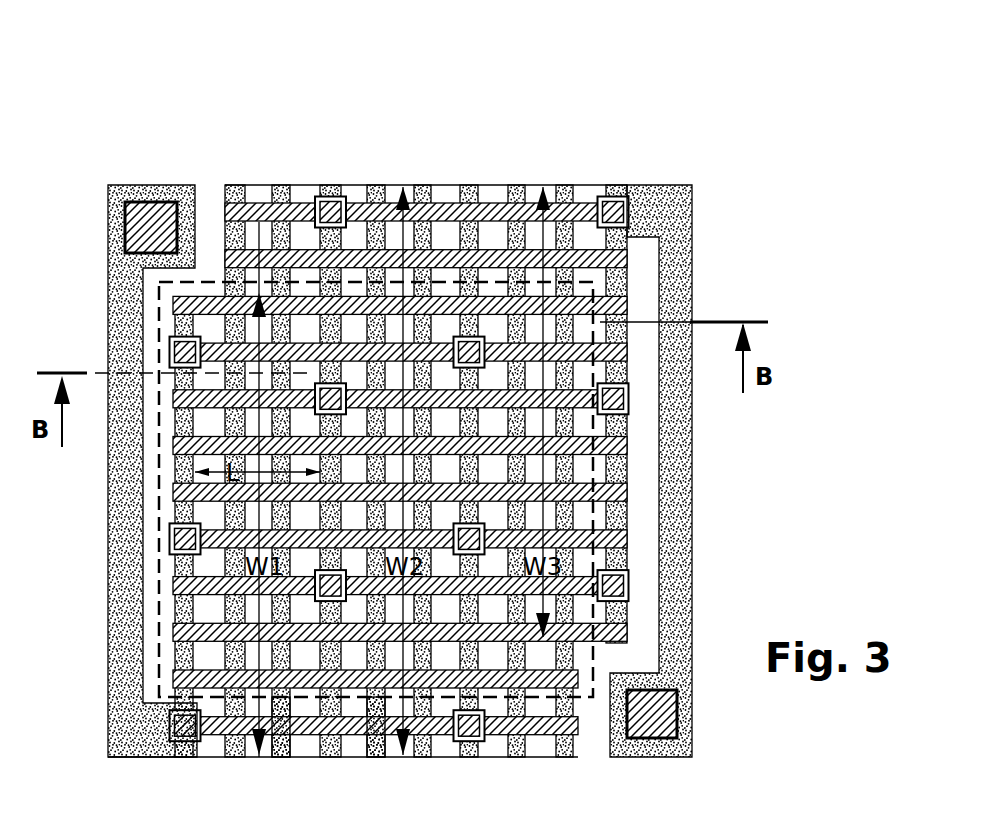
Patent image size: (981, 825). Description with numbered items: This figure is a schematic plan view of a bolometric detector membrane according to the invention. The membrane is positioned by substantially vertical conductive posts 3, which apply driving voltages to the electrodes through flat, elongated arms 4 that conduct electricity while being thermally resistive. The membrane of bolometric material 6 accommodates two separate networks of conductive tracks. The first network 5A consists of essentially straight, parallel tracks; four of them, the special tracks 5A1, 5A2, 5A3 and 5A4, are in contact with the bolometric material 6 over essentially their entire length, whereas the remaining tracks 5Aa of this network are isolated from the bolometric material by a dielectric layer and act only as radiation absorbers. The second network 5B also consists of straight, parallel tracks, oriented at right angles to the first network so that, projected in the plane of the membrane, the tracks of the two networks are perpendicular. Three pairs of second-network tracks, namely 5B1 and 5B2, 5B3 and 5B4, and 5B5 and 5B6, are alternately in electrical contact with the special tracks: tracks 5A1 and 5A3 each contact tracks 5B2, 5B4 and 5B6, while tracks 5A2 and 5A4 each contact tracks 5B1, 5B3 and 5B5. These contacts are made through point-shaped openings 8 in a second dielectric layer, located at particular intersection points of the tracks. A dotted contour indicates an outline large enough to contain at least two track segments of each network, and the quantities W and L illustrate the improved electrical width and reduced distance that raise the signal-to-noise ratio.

The post 3 is at (150, 198).
The arm 4 is at (120, 347).
The first network of conductive tracks 5A is at (421, 180).
The special conductive track of the first network 5A1 is at (177, 658).
The special conductive track of the first network 5A2 is at (318, 236).
The special conductive track of the first network 5A3 is at (478, 655).
The special conductive track of the first network 5A4 is at (624, 467).
The absorber conductive tracks of the first network 5Aa is at (230, 703).
The second network of conductive tracks 5B is at (581, 246).
The conductive track of the second network 5B1 is at (450, 202).
The conductive track of the second network 5B2 is at (586, 330).
The conductive track of the second network 5B3 is at (627, 428).
The conductive track of the second network 5B4 is at (608, 567).
The conductive track of the second network 5B5 is at (200, 593).
The conductive track of the second network 5B6 is at (450, 742).
The bolometric material 6 is at (259, 215).
The point-shaped opening 8 is at (472, 523).